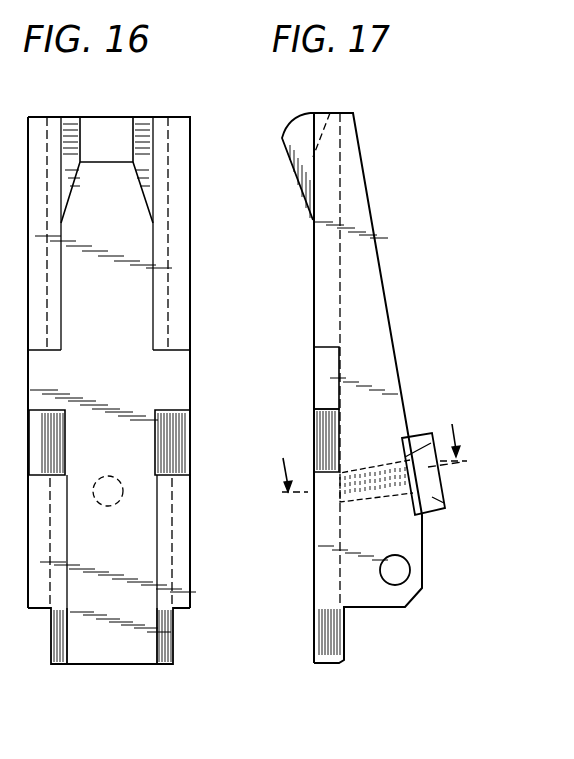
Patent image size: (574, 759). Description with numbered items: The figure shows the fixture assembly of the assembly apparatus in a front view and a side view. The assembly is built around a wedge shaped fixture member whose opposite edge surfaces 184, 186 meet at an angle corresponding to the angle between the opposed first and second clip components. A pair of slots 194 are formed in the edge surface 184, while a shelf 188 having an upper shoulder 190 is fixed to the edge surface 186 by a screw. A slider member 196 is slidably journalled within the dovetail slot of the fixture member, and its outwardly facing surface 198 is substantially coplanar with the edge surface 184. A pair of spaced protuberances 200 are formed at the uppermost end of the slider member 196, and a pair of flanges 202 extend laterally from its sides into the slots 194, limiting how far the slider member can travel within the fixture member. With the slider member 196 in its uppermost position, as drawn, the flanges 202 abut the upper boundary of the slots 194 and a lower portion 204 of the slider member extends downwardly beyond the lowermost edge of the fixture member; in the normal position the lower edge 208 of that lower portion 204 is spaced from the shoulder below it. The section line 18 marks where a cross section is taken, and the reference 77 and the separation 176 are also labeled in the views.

In FIG. 17, the section line 18- 18 is at (367, 443).
In FIG. 16, the pivot hole 77 is at (98, 541).
In FIG. 16, the separation 176 is at (21, 749).
In FIG. 16, the edge surface 184 is at (178, 232).
In FIG. 17, the edge surface 184 is at (313, 271).
In FIG. 17, the edge surface 186 is at (372, 211).
In FIG. 17, the shelf 188 is at (432, 512).
In FIG. 17, the upper shoulder 190 is at (415, 432).
In FIG. 16, the slots 194 is at (178, 437).
In FIG. 17, the slots 194 is at (337, 437).
In FIG. 16, the slider member 196 is at (122, 348).
In FIG. 16, the outwardly facing surface 198 is at (145, 305).
In FIG. 17, the outwardly facing surface 198 is at (312, 310).
In FIG. 16, the protuberances 200 is at (76, 116).
In FIG. 17, the protuberances 200 is at (289, 132).
In FIG. 16, the flanges 202 is at (177, 378).
In FIG. 17, the flanges 202 is at (333, 395).
In FIG. 16, the lower portion 204 is at (145, 641).
In FIG. 17, the lower portion 204 is at (320, 617).
In FIG. 16, the lower edge 208 is at (108, 667).
In FIG. 17, the lower edge 208 is at (323, 663).